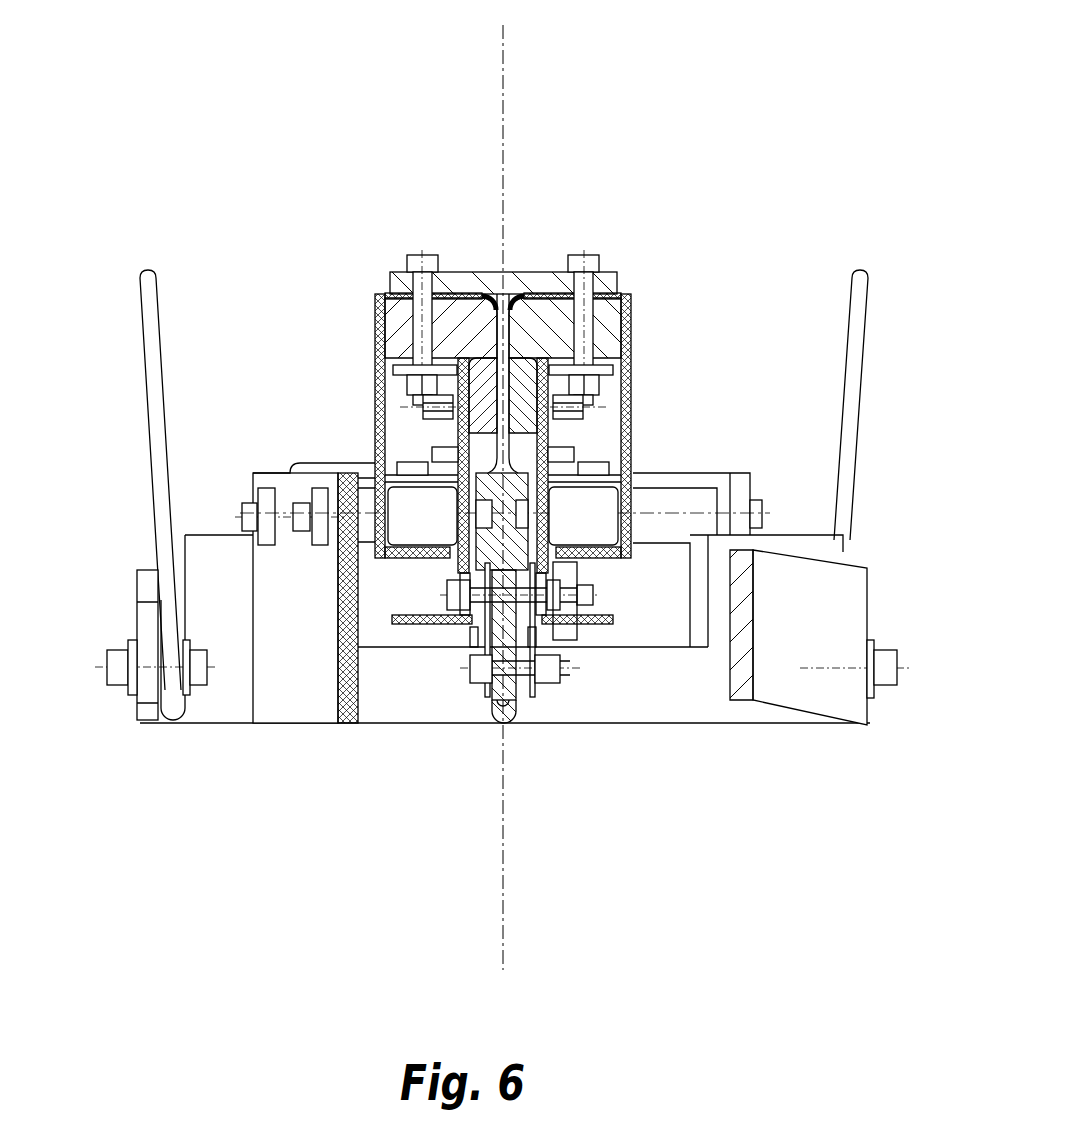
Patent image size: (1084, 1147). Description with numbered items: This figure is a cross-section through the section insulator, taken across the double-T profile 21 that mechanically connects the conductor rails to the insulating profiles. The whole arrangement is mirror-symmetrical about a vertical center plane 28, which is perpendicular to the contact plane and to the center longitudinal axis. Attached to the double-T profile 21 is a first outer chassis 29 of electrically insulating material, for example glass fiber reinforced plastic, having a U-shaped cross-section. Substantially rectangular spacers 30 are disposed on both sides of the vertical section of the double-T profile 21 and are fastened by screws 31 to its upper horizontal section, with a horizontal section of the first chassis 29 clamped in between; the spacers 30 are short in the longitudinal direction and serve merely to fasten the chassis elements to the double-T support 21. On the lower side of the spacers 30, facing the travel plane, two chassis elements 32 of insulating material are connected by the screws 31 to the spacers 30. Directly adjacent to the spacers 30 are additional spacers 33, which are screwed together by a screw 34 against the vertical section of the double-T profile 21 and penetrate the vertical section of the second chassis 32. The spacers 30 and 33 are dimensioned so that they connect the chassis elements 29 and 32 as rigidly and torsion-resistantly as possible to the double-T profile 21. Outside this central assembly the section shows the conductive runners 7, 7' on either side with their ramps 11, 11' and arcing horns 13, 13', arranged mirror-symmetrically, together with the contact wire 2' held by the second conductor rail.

The contact wire 2' is at (502, 669).
The first conductive runner 7 is at (505, 669).
The conductive runner 7' is at (291, 664).
The electrically conductive ramp 11 is at (820, 708).
The ramp 11' is at (155, 700).
The arcing horn 13 is at (864, 308).
The arcing horn 13' is at (157, 383).
The double-T profile 21 is at (520, 287).
The vertical center plane 28 is at (506, 42).
The first outer chassis 29 is at (376, 302).
The spacers 30 is at (470, 335).
The screws 31 is at (410, 268).
The chassis elements 32 is at (455, 422).
The additional spacers 33 is at (452, 432).
The screw 34 is at (397, 392).